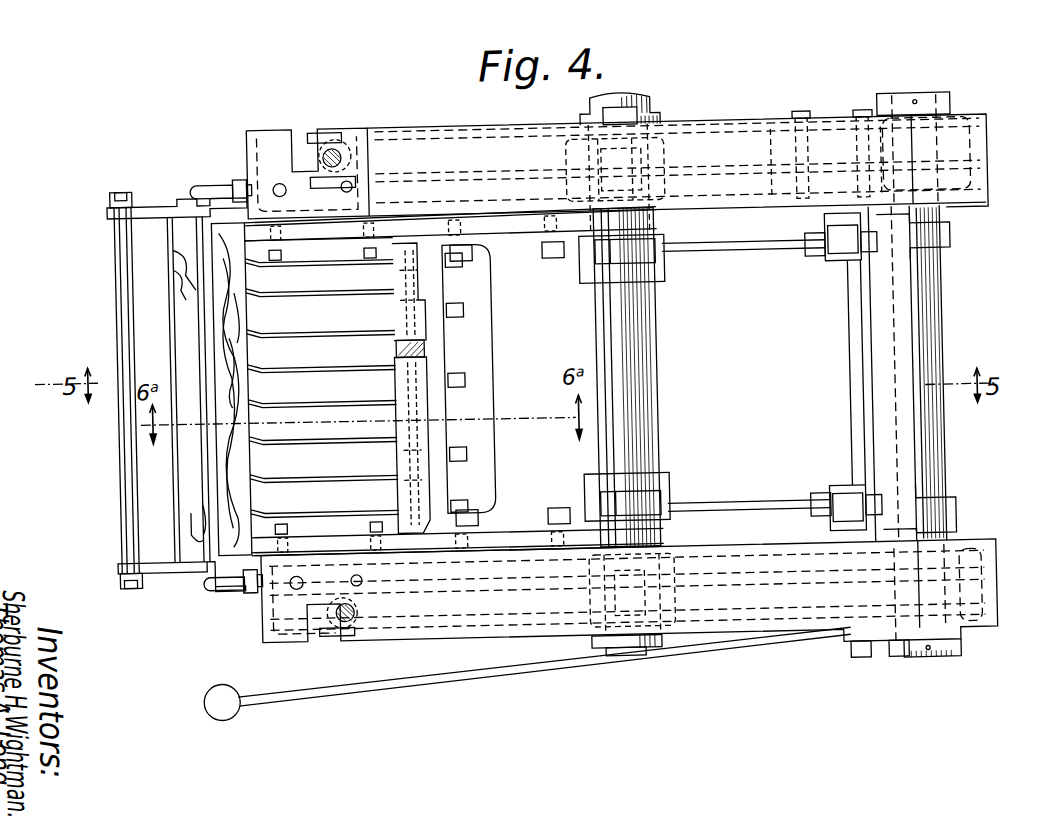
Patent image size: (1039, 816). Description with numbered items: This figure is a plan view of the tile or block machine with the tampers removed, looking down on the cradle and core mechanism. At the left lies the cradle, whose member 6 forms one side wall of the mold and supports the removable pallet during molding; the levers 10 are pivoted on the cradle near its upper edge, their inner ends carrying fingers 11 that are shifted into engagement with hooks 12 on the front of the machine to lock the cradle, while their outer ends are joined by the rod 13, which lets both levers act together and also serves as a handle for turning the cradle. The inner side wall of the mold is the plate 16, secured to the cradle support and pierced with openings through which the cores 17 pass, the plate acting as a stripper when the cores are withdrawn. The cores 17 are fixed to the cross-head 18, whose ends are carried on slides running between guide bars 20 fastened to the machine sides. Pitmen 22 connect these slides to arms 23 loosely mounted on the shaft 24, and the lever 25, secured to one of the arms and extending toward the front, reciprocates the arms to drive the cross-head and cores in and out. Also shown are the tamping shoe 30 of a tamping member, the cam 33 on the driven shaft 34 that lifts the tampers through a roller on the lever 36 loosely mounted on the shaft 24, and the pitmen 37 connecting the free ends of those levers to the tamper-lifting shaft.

The cradle member 6 is at (212, 334).
The levers 10 is at (181, 376).
The fingers 11 is at (231, 175).
The hooks 12 is at (206, 183).
The rod 13 is at (128, 441).
The plate 16 is at (400, 485).
The cores 17 is at (322, 378).
The cross-head 18 is at (465, 340).
The guide bars 20 is at (519, 226).
The pitmen 22 is at (754, 255).
The arms 23 is at (938, 249).
The shaft 24 is at (938, 465).
The lever 25 is at (718, 654).
The tamping shoe 30 is at (668, 150).
The cam 33 is at (746, 135).
The driven shaft 34 is at (655, 391).
The lever 36 is at (324, 128).
The pitmen 37 is at (322, 152).